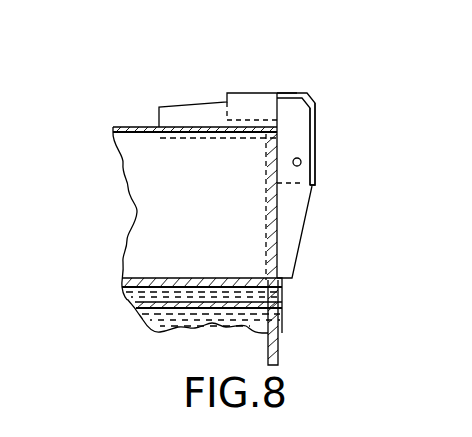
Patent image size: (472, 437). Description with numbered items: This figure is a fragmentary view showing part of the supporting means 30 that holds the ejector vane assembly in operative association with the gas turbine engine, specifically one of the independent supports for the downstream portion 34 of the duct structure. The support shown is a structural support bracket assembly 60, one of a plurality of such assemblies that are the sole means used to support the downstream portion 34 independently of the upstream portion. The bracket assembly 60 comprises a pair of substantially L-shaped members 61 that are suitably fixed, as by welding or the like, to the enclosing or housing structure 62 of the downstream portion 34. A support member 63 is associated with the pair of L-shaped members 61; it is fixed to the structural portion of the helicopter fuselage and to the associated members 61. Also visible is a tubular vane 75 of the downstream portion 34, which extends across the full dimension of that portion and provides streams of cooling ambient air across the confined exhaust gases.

The supporting means 30 is at (320, 71).
The downstream portion 34 is at (119, 125).
The structural support bracket assembly 60 is at (320, 111).
The L-shaped member 61 is at (178, 107).
The housing structure 62 is at (283, 221).
The support member 63 is at (317, 149).
The tubular vane 75 is at (157, 277).